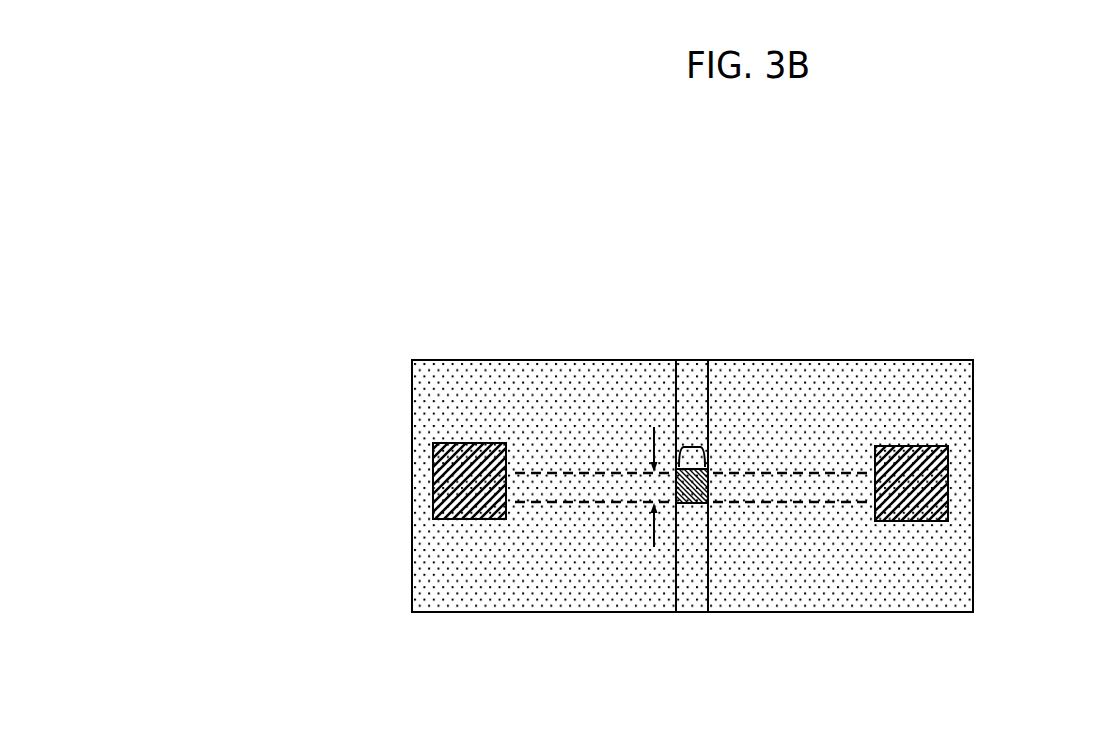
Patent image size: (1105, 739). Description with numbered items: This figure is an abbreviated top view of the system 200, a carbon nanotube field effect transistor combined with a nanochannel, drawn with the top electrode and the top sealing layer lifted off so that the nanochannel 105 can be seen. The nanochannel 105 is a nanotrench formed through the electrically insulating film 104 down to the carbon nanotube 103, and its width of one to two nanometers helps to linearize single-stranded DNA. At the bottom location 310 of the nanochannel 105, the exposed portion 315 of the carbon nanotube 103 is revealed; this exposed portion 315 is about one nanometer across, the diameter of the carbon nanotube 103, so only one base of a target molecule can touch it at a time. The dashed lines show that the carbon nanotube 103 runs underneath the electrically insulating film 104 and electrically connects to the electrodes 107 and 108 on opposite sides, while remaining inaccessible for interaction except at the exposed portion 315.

The system 200 is at (291, 100).
The electrically insulating film 104 is at (647, 588).
The nanochannel 105 is at (691, 588).
The electrode 108 is at (433, 482).
The electrode 107 is at (948, 483).
The carbon nanotube 103 is at (581, 509).
The exposed portion 315 is at (688, 512).
The bottom location 310 is at (692, 447).